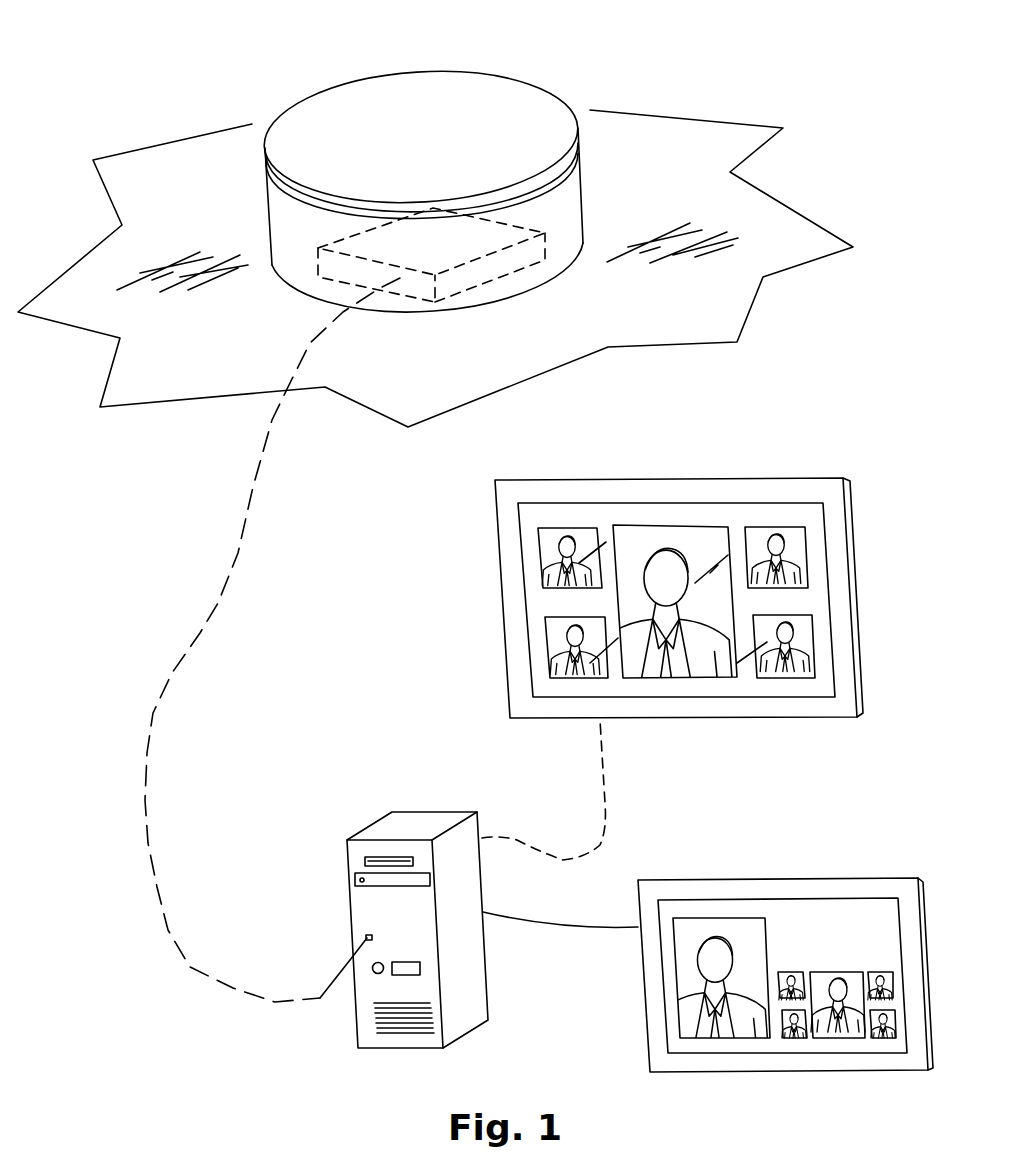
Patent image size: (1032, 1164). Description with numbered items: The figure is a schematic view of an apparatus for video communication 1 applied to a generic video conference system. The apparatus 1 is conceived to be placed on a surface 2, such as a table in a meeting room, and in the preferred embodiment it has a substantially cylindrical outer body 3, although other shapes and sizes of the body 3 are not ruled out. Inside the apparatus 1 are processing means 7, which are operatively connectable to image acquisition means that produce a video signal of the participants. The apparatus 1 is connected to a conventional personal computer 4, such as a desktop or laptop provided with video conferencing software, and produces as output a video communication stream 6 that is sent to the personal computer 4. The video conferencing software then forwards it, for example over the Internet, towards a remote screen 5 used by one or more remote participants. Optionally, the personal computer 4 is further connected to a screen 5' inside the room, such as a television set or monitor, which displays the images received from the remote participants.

The apparatus for video communication 1 is at (598, 44).
The surface 2 is at (678, 165).
The outer body 3 is at (266, 213).
The personal computer 4 is at (462, 953).
The remote screen 5 is at (679, 574).
The screen 5' is at (785, 952).
The video communication stream 6 is at (210, 612).
The processing means 7 is at (485, 275).